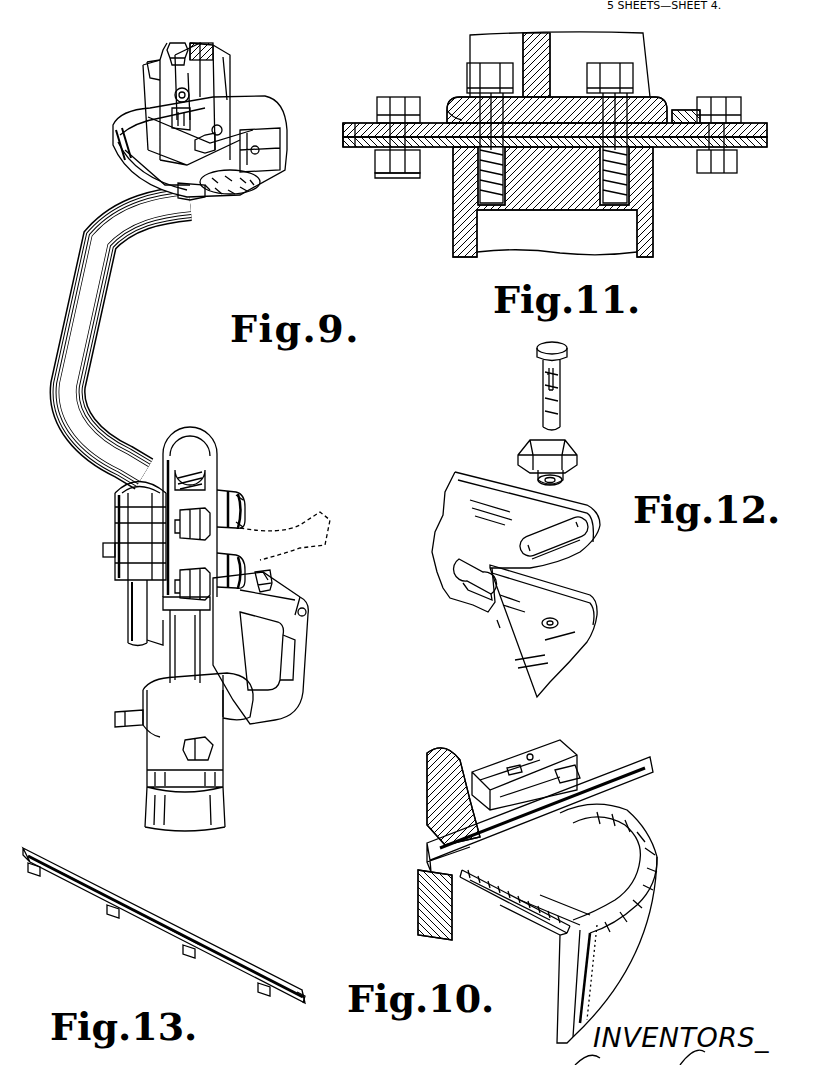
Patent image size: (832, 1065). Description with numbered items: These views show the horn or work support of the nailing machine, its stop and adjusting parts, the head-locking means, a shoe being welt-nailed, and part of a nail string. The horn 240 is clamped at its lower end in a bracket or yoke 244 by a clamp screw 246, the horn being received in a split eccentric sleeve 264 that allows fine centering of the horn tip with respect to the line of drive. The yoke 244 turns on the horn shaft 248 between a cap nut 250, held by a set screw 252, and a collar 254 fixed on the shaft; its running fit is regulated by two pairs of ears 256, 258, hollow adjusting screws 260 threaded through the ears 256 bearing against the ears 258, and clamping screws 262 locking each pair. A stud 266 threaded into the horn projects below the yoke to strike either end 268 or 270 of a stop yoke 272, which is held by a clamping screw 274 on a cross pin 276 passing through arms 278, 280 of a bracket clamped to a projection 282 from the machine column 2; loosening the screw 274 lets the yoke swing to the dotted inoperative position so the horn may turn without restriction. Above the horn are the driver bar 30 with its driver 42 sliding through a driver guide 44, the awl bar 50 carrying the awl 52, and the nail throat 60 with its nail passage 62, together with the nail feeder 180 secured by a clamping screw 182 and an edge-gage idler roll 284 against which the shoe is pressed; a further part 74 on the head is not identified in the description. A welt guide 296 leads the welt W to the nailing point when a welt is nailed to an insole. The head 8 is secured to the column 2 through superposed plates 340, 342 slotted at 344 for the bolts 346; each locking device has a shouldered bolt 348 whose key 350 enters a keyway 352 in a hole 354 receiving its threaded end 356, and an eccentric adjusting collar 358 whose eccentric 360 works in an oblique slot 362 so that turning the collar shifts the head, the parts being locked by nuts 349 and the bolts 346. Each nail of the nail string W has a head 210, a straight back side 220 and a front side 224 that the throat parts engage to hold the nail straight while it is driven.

In FIG. 9, the machine column 2 is at (225, 803).
In FIG. 11, the head 8 is at (623, 43).
In FIG. 9, the driver bar 30 is at (180, 47).
In FIG. 9, the driver 42 is at (177, 115).
In FIG. 9, the driver guide 44 is at (187, 95).
In FIG. 9, the awl bar 50 is at (212, 57).
In FIG. 9, the awl 52 is at (200, 147).
In FIG. 9, the nail throat 60 is at (220, 145).
In FIG. 10, the nail throat 60 is at (560, 742).
In FIG. 10, the nail passage 62 is at (513, 765).
In FIG. 9, the lug 74 is at (147, 68).
In FIG. 9, the nail feeder 180 is at (143, 140).
In FIG. 9, the clamping screw 182 is at (180, 192).
In FIG. 13, the nail head 210 is at (30, 876).
In FIG. 13, the back side of nail 220 is at (68, 866).
In FIG. 13, the front side of nail shank 224 is at (88, 893).
In FIG. 9, the horn 240 is at (80, 287).
In FIG. 10, the horn 240 is at (465, 907).
In FIG. 9, the horn bracket or yoke 244 is at (113, 527).
In FIG. 9, the clamp screw 246 is at (107, 550).
In FIG. 9, the horn shaft 248 is at (185, 625).
In FIG. 9, the cap nut 250 is at (200, 437).
In FIG. 9, the set screw 252 is at (220, 457).
In FIG. 9, the collar 254 is at (173, 617).
In FIG. 9, the ears 256 is at (220, 480).
In FIG. 9, the ears 258 is at (240, 490).
In FIG. 9, the hollow adjusting screw 260 is at (233, 503).
In FIG. 9, the clamping screw 262 is at (220, 517).
In FIG. 9, the split eccentric sleeve 264 is at (115, 488).
In FIG. 9, the stud 266 is at (182, 597).
In FIG. 9, the stop end 268 is at (157, 645).
In FIG. 9, the stop end 270 is at (267, 685).
In FIG. 9, the yoke 272 is at (290, 597).
In FIG. 9, the clamping screw 274 is at (270, 580).
In FIG. 9, the cross pin 276 is at (306, 612).
In FIG. 9, the bracket arm 278 is at (277, 583).
In FIG. 9, the bracket arm 280 is at (297, 650).
In FIG. 9, the projection 282 is at (223, 772).
In FIG. 9, the idler roll 284 is at (240, 197).
In FIG. 9, the welt guide 296 is at (207, 195).
In FIG. 11, the upper plate 340 is at (680, 127).
In FIG. 12, the upper plate 340 is at (587, 507).
In FIG. 11, the lower plate 342 is at (657, 157).
In FIG. 12, the lower plate 342 is at (597, 602).
In FIG. 11, the slots 344 is at (480, 107).
In FIG. 12, the slots 344 is at (465, 572).
In FIG. 11, the bolts 346 is at (490, 67).
In FIG. 11, the shouldered locking bolt 348 is at (390, 100).
In FIG. 12, the shouldered locking bolt 348 is at (563, 372).
In FIG. 11, the nuts 349 is at (410, 175).
In FIG. 12, the key 350 is at (548, 385).
In FIG. 12, the keyway 352 is at (540, 623).
In FIG. 11, the hole 354 is at (400, 175).
In FIG. 12, the hole 354 is at (560, 623).
In FIG. 12, the threaded lower end 356 is at (560, 407).
In FIG. 11, the eccentric adjusting collar 358 is at (378, 117).
In FIG. 12, the eccentric adjusting collar 358 is at (577, 457).
In FIG. 12, the eccentric 360 is at (563, 477).
In FIG. 11, the oblique slot 362 is at (372, 150).
In FIG. 12, the oblique slot 362 is at (553, 538).
In FIG. 10, the nail string W is at (650, 770).
In FIG. 13, the nail string W is at (128, 903).